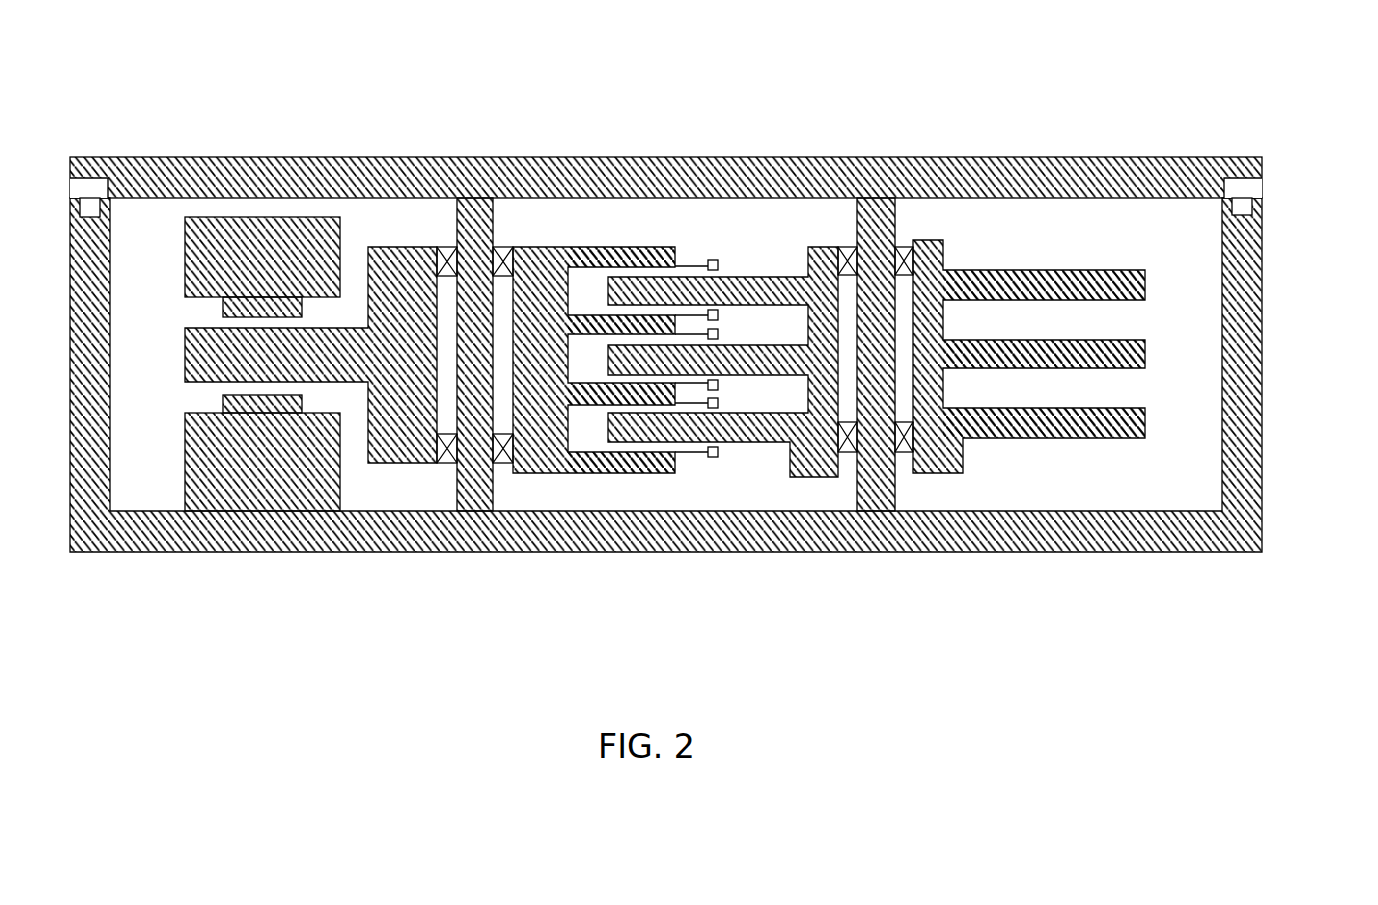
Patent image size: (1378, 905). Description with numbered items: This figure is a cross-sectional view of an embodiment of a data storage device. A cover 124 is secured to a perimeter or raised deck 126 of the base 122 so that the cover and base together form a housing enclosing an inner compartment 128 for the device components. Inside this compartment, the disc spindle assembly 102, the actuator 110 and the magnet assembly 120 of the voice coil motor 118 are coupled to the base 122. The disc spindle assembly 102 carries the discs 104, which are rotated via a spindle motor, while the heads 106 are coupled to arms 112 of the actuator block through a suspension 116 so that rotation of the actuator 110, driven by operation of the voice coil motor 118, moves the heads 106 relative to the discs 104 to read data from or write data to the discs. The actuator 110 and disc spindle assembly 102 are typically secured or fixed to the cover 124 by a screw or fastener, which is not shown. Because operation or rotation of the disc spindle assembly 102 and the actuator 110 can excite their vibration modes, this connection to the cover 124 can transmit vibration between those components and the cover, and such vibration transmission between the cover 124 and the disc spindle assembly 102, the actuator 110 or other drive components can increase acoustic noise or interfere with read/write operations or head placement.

The disc spindle assembly 102 is at (1130, 279).
The discs 104 is at (1148, 287).
The heads 106 is at (715, 312).
The actuator 110 is at (626, 356).
The arms 112 is at (678, 317).
The suspension 116 is at (715, 452).
The voice coil motor 118 is at (327, 278).
The magnet assembly 120 is at (263, 253).
The base 122 is at (1258, 415).
The cover 124 is at (665, 157).
The raised deck 126 is at (1262, 203).
The inner compartment 128 is at (1018, 240).